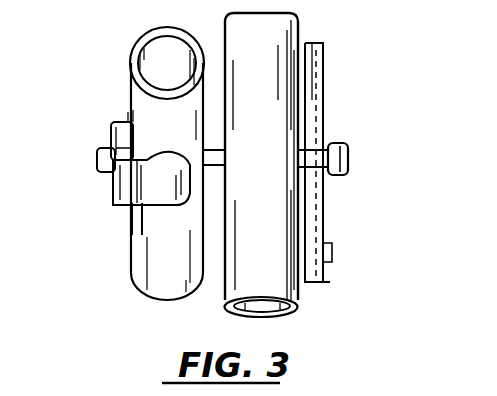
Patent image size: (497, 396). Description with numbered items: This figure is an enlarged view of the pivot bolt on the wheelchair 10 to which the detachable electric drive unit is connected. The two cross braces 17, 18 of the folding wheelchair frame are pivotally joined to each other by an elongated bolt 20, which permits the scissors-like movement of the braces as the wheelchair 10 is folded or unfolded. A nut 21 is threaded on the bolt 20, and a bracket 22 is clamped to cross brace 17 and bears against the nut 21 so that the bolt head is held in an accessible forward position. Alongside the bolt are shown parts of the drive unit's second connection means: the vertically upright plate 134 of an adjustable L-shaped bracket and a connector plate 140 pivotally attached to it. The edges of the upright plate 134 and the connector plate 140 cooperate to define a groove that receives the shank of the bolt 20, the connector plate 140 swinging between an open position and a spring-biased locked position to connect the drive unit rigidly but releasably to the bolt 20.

The wheelchair 10 is at (10, 342).
The cross brace 17 is at (130, 79).
The cross brace 18 is at (300, 25).
The elongated bolt 20 is at (333, 141).
The nut 21 is at (110, 138).
The bracket 22 is at (115, 190).
The vertically upright plate 134 is at (316, 39).
The connector plate 140 is at (323, 53).